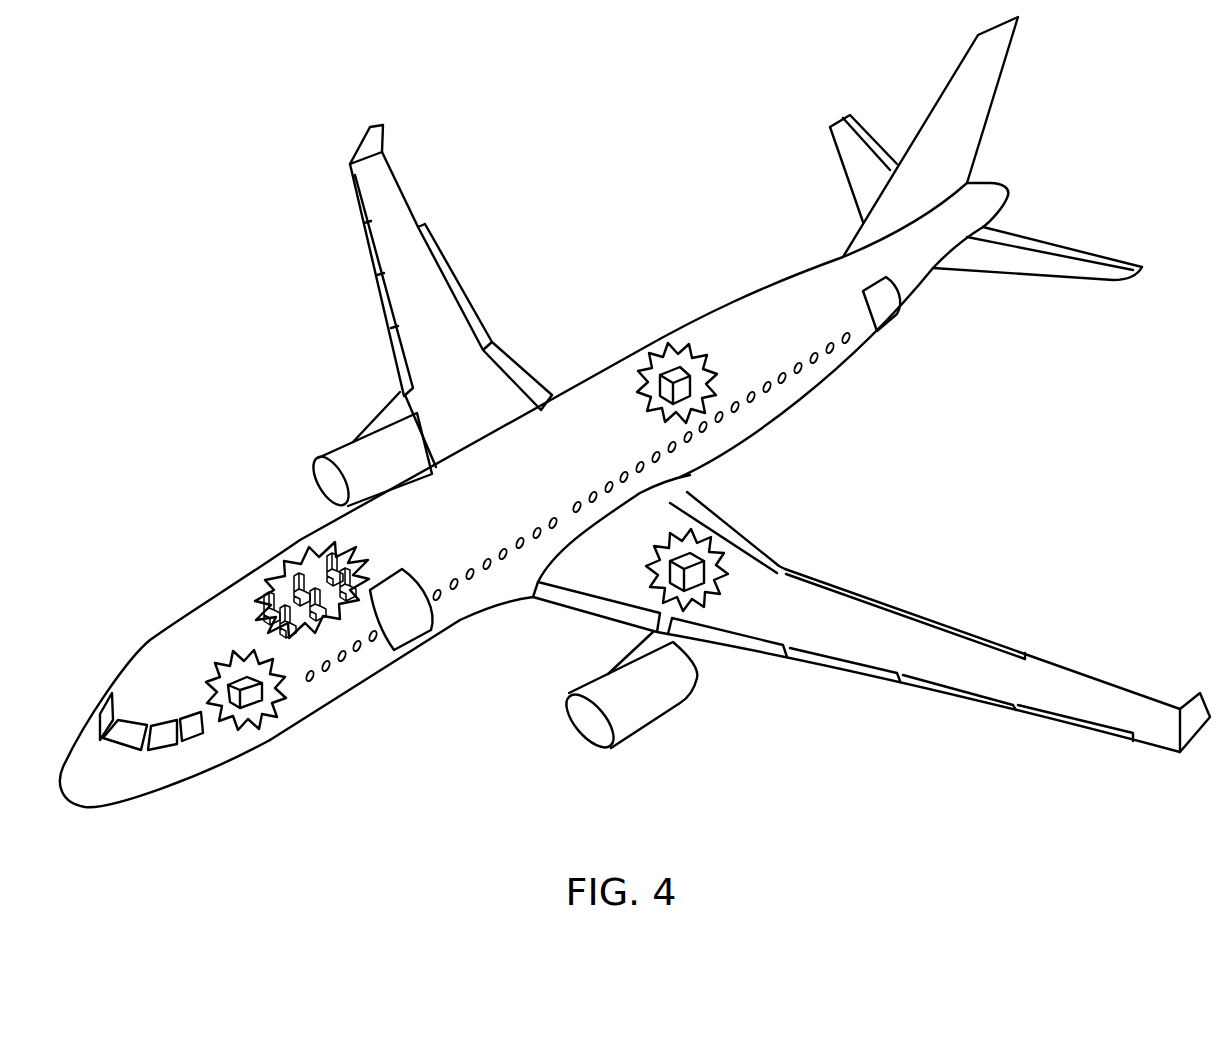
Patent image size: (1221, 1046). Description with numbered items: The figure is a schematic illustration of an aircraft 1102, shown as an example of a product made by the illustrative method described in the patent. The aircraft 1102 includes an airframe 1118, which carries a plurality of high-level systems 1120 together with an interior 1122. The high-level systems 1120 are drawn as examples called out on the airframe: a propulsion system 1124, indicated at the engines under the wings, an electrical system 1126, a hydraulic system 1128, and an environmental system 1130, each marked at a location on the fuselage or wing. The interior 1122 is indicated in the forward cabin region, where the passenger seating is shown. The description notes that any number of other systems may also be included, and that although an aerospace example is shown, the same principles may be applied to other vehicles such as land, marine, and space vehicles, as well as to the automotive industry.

The aircraft 1102 is at (180, 367).
The airframe 1118 is at (300, 537).
The high-level systems 1120 is at (950, 518).
The interior 1122 is at (265, 600).
The propulsion system 1124 is at (338, 447).
The electrical system 1126 is at (240, 680).
The hydraulic system 1128 is at (697, 575).
The environmental system 1130 is at (672, 370).